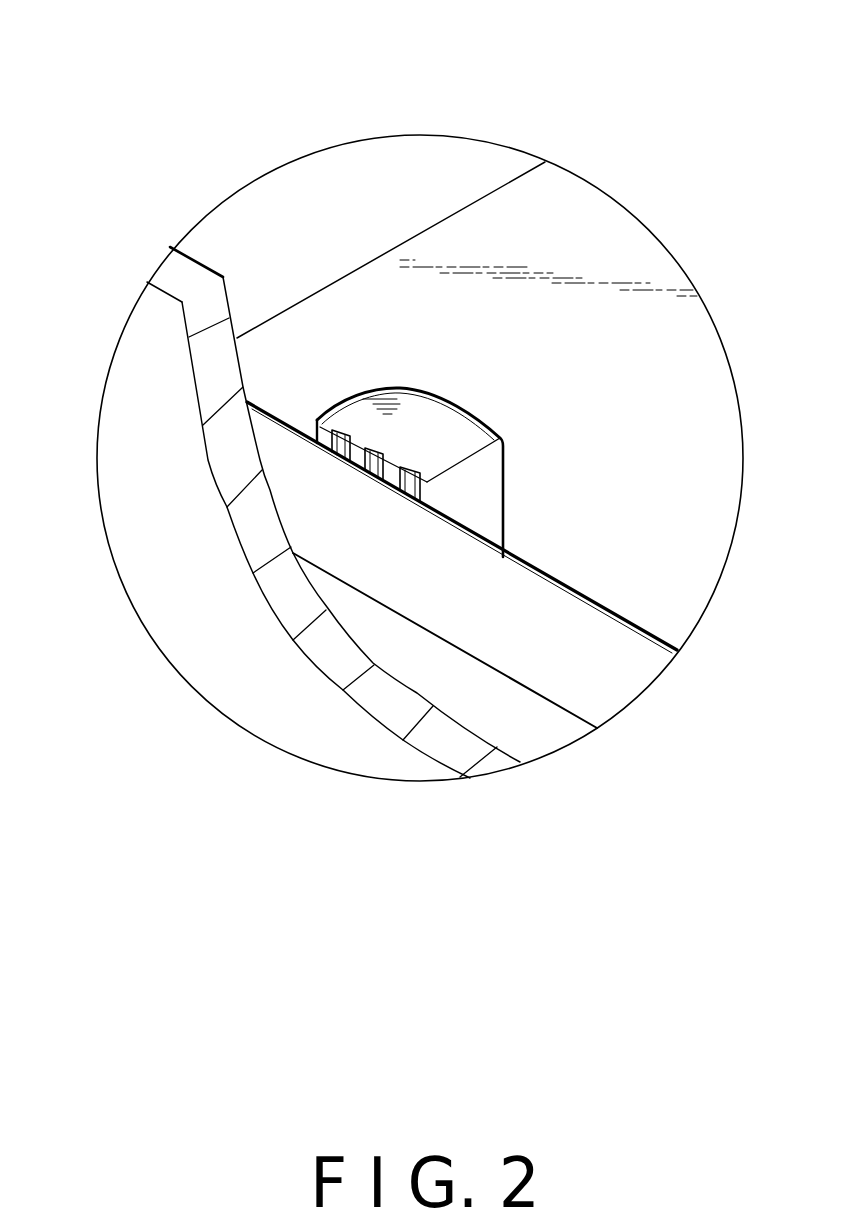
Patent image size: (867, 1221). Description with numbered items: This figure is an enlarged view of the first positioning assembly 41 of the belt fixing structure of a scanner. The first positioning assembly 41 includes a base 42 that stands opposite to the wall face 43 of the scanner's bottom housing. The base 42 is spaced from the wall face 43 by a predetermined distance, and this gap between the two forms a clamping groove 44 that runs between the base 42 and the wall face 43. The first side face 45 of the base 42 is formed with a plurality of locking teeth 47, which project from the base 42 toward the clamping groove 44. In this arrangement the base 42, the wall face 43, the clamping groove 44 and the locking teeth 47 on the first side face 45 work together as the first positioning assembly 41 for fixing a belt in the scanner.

The first positioning assembly 41 is at (348, 337).
The base 42 is at (448, 427).
The wall face 43 is at (358, 485).
The clamping groove 44 is at (313, 433).
The first side face 45 is at (395, 458).
The locking teeth 47 is at (360, 437).